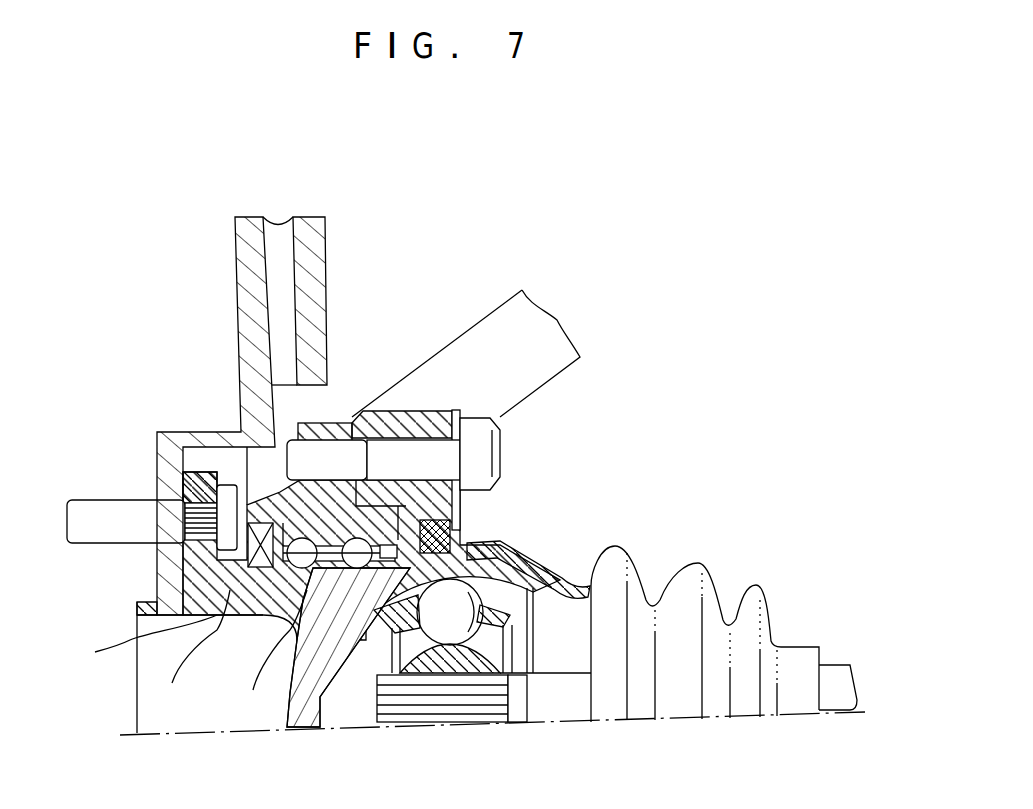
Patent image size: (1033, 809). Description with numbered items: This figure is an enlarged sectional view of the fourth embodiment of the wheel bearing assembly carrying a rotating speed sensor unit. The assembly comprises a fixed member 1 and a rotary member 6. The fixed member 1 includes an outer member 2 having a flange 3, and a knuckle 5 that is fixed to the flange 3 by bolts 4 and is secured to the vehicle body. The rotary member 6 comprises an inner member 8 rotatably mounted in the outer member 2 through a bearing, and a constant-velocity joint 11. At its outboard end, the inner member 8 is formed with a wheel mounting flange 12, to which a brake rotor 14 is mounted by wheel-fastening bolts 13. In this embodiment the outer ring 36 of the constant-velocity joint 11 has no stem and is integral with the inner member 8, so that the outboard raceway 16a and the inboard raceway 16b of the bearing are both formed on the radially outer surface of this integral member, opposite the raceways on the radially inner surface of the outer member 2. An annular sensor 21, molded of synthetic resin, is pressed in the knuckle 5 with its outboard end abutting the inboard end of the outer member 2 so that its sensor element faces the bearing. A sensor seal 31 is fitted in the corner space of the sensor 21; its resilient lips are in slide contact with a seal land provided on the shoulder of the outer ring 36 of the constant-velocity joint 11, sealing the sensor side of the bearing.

The fixed member 1 is at (403, 378).
The outer member 2 is at (293, 500).
The flange 3 is at (330, 424).
The bolts 4 is at (480, 455).
The knuckle 5 is at (547, 365).
The rotary member 6 is at (130, 606).
The inner member 8 is at (144, 647).
The constant-velocity joint 11 is at (634, 540).
The wheel mounting flange 12 is at (200, 470).
The wheel-fastening bolts 13 is at (128, 520).
The brake rotor 14 is at (238, 263).
The outboard raceway 16a is at (187, 658).
The inboard raceway 16b is at (265, 658).
The annular sensor 21 is at (410, 520).
The sensor seal 31 is at (455, 540).
The outer ring 36 is at (297, 713).